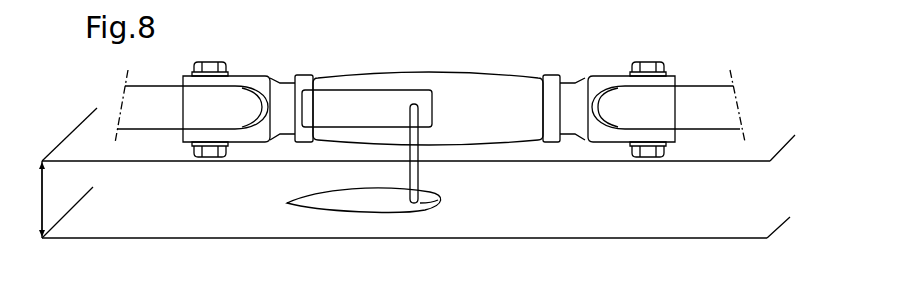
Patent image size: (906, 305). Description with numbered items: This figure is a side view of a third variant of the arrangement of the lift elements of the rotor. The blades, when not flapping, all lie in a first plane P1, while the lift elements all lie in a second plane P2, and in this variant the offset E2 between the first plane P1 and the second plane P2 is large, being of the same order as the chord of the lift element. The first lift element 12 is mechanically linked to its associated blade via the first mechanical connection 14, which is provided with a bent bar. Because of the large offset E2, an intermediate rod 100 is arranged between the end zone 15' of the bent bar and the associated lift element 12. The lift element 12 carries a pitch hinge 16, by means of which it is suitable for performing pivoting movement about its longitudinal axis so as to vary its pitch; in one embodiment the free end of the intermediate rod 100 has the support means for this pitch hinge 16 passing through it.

The first plane P1 is at (60, 137).
The second plane P2 is at (77, 238).
The offset E2 is at (43, 187).
The first mechanical connection 14 is at (357, 98).
The end zone of bent bar 15' is at (428, 78).
The intermediate rod 100 is at (413, 173).
The first lift element 12 is at (360, 203).
The pitch hinge 16 is at (437, 198).